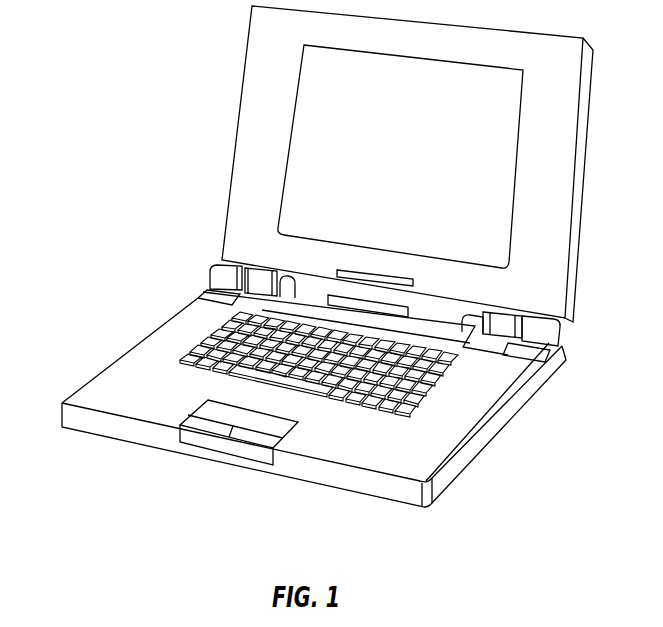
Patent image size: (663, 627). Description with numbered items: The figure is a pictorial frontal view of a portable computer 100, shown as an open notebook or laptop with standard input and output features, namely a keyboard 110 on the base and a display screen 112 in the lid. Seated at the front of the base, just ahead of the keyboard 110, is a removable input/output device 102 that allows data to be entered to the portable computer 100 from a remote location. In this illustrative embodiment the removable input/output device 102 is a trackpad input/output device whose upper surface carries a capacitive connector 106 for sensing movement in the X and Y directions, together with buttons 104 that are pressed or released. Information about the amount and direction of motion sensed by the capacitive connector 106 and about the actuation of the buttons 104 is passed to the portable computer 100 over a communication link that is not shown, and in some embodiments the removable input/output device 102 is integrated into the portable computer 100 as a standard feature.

The portable computer 100 is at (113, 209).
The removable input/output device 102 is at (188, 418).
The buttons 104 is at (275, 444).
The capacitive connector 106 is at (222, 405).
The keyboard 110 is at (450, 377).
The display screen 112 is at (425, 160).